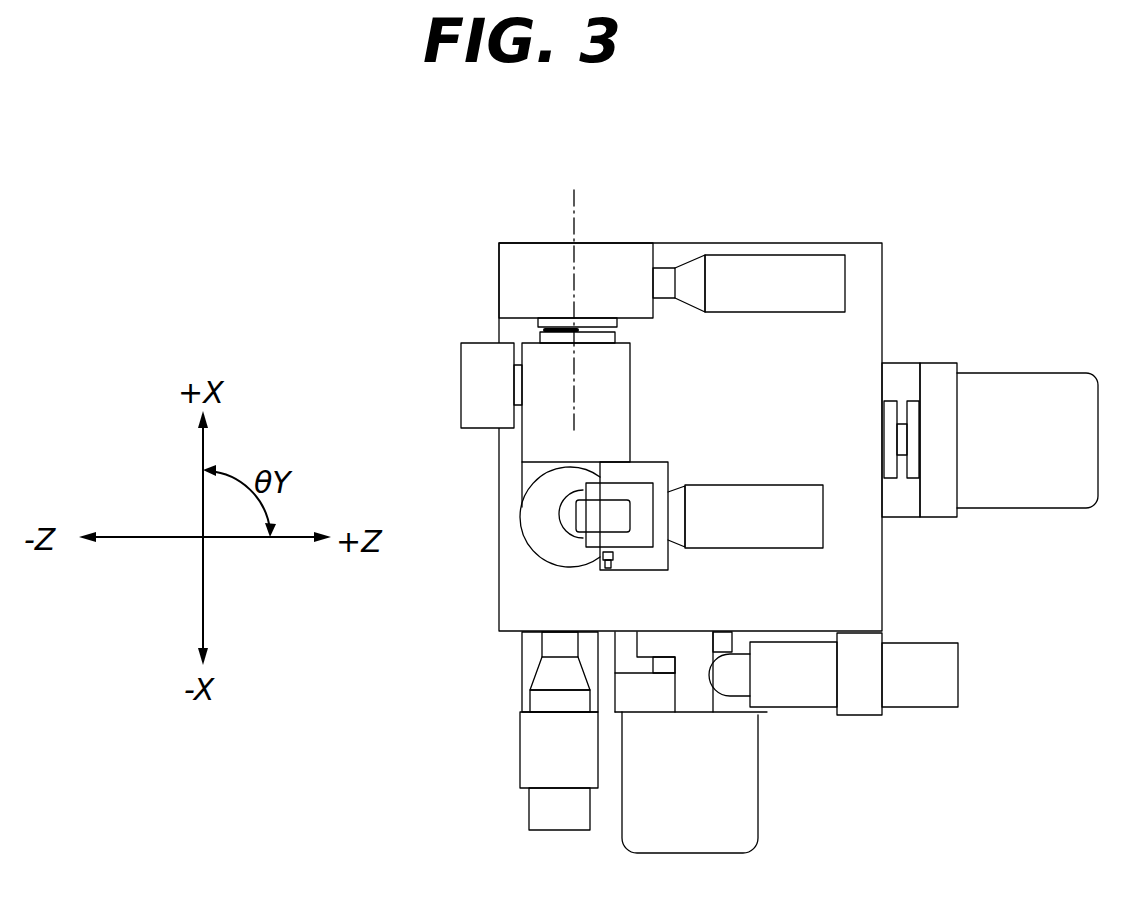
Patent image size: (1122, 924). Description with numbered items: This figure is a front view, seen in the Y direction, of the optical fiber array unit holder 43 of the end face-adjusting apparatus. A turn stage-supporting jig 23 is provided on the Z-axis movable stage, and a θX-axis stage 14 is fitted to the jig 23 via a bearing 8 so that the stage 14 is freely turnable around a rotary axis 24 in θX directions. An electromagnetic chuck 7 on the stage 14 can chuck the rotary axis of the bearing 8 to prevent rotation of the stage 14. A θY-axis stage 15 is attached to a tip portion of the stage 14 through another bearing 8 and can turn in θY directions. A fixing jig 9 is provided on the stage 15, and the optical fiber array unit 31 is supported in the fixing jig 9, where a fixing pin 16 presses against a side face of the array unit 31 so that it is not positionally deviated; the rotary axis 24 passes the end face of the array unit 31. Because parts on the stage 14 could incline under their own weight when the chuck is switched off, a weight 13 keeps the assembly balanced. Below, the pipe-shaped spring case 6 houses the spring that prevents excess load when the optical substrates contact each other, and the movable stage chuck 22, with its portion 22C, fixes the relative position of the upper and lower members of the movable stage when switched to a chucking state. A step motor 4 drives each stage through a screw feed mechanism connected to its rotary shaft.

The optical fiber array unit holder 43 is at (957, 336).
The turn stage-supporting jig 23 is at (515, 265).
The rotary axis 24 is at (574, 216).
The electromagnetic chuck 7 is at (785, 268).
The bearing 8 is at (538, 330).
The weight 13 is at (473, 375).
The θX-axis stage 14 is at (608, 368).
The fixing jig 9 is at (600, 483).
The θY-axis stage 15 is at (648, 470).
The optical fiber array unit 31 is at (587, 512).
The fixing pin 16 is at (607, 563).
The nozzle portion 22C is at (552, 642).
The movable stage chuck 22 is at (533, 752).
The spring case 6 is at (935, 672).
The step motor 4 is at (1023, 473).